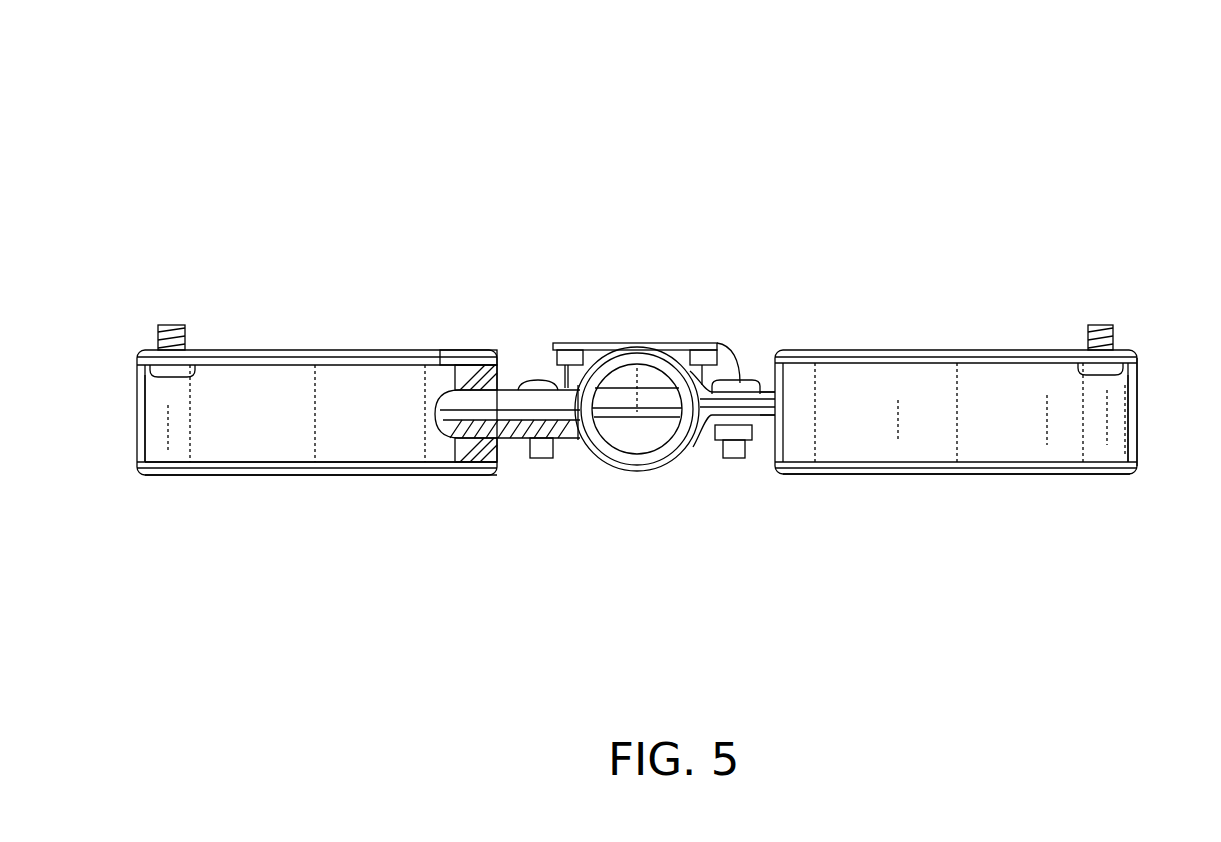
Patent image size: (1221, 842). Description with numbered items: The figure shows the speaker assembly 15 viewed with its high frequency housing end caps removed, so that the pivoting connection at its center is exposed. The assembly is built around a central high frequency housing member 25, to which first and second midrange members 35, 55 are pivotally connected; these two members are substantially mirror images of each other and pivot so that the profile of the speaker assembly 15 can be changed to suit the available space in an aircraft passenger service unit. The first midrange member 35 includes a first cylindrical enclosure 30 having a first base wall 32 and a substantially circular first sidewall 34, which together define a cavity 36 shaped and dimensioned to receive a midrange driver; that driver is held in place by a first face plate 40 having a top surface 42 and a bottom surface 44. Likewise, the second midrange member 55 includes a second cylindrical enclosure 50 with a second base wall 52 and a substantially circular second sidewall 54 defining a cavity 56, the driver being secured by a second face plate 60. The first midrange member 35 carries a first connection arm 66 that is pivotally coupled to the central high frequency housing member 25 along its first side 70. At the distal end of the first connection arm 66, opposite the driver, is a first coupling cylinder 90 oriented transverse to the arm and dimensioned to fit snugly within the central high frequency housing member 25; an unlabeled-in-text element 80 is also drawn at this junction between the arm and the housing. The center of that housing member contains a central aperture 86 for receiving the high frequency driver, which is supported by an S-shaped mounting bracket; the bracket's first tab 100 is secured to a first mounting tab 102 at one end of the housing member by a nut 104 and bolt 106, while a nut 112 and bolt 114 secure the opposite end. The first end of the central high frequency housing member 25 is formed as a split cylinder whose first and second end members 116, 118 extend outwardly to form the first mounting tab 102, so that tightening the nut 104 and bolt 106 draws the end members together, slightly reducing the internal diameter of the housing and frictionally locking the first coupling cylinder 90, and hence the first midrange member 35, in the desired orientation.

The speaker assembly 15 is at (527, 155).
The central high frequency housing member 25 is at (650, 478).
The first cylindrical enclosure 30 is at (342, 350).
The first base wall 32 is at (358, 478).
The first sidewall 34 is at (257, 448).
The first midrange member 35 is at (302, 312).
The cavity 36 is at (190, 435).
The first face plate 40 is at (235, 350).
The top surface 42 is at (442, 350).
The bottom surface 44 is at (135, 365).
The second cylindrical enclosure 50 is at (1025, 437).
The second base wall 52 is at (932, 475).
The second sidewall 54 is at (1112, 407).
The second midrange member 55 is at (972, 322).
The cavity 56 is at (1078, 440).
The second face plate 60 is at (1022, 350).
The first connection arm 66 is at (535, 440).
The first side 70 is at (633, 343).
The pin end 80 is at (578, 440).
The central aperture 86 is at (735, 390).
The first coupling cylinder 90 is at (606, 468).
The first tab 100 is at (745, 380).
The first mounting tab 102 is at (750, 440).
The nut 104 is at (718, 458).
The bolt 106 is at (745, 380).
The nut 112 is at (516, 458).
The bolt 114 is at (532, 380).
The first end member 116 is at (778, 417).
The second end member 118 is at (784, 398).